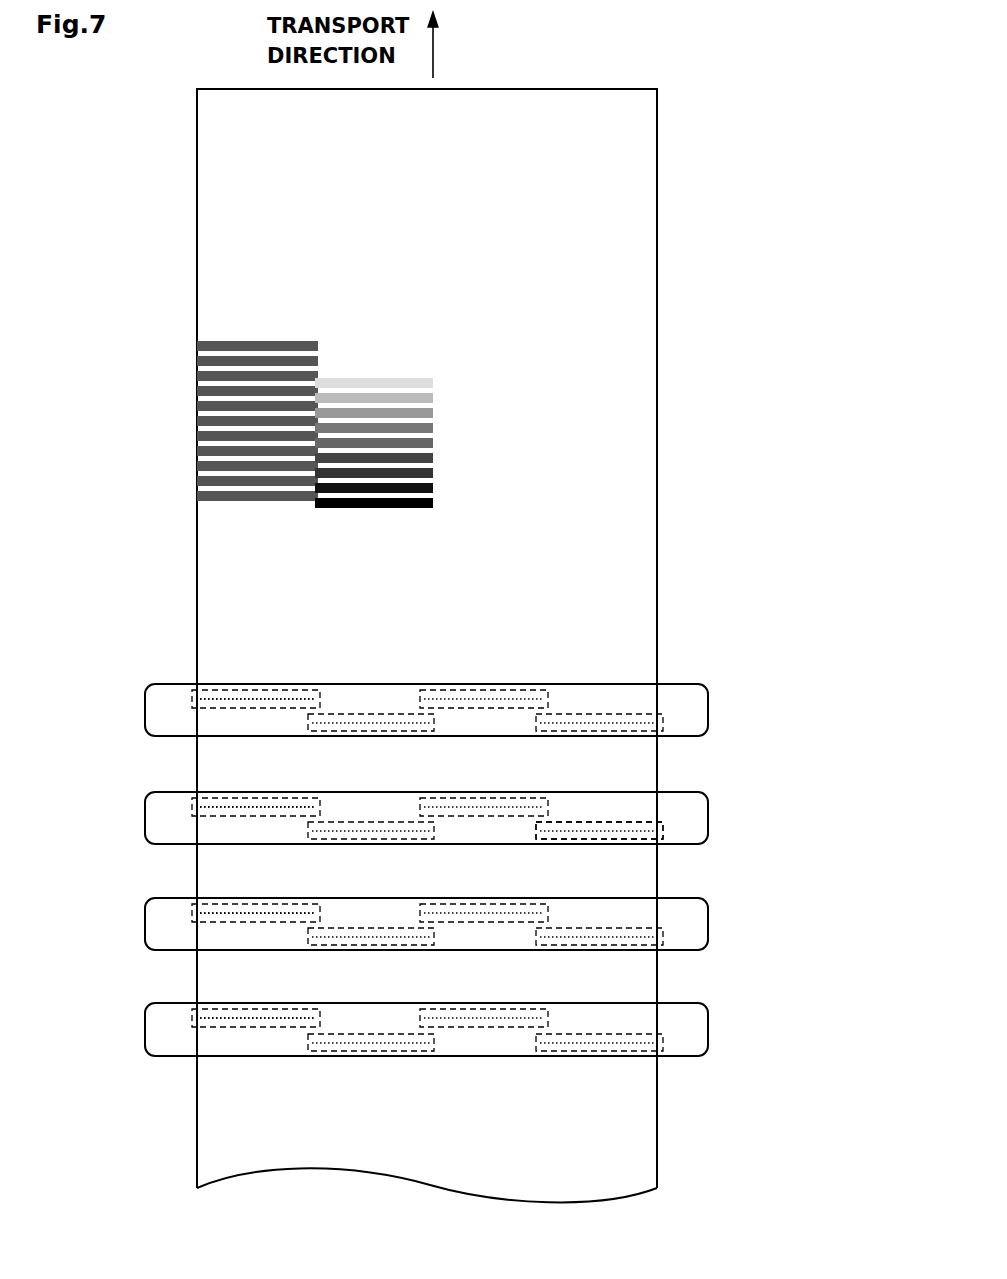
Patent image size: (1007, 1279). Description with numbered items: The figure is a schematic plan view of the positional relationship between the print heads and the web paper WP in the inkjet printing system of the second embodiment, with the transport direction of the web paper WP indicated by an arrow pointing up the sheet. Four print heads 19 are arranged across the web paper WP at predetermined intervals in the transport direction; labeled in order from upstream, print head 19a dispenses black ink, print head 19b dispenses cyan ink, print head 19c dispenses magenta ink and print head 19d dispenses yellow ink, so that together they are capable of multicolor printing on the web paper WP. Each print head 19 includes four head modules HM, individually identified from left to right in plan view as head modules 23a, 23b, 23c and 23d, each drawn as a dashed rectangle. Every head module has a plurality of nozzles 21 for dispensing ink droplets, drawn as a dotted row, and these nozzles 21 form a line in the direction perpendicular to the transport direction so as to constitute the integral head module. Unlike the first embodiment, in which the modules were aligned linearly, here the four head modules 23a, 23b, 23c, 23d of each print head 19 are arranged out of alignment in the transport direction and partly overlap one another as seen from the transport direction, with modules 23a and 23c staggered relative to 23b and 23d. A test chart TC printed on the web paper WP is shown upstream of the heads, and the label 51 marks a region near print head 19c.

The web paper WP is at (203, 105).
The test chart TC is at (338, 331).
The print head 19 is at (484, 870).
The print head 19a is at (697, 1025).
The print head 19b is at (697, 919).
The print head 19c is at (697, 813).
The print head 19d is at (697, 705).
The nozzles 21 is at (208, 698).
The head module 23a is at (250, 678).
The head module 23b is at (371, 708).
The head module 23c is at (483, 680).
The head module 23d is at (593, 708).
The head module region 51 is at (599, 803).